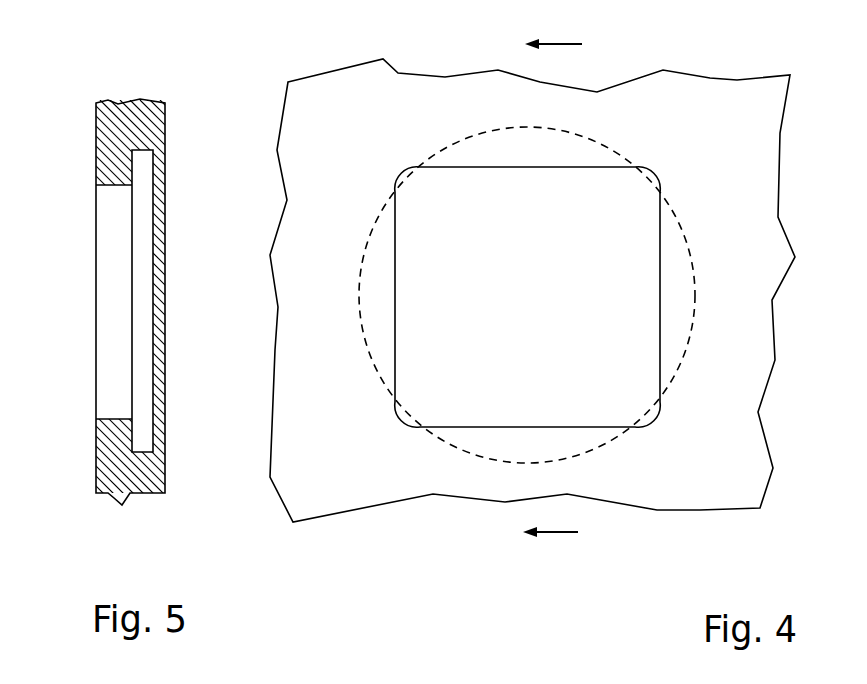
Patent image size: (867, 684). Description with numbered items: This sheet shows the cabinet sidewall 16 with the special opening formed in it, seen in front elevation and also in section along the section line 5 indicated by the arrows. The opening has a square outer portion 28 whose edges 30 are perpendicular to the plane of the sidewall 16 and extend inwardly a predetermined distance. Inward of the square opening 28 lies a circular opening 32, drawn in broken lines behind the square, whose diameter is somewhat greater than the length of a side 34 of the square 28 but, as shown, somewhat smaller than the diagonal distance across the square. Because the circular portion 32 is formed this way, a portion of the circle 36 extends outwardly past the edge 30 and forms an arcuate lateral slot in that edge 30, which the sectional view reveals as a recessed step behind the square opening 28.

In FIG. 4, the section line of Fig. 5 is at (562, 290).
In FIG. 5, the panel 16 is at (151, 125).
In FIG. 4, the panel 16 is at (662, 102).
In FIG. 5, the square outer portion 28 is at (112, 294).
In FIG. 4, the square outer portion 28 is at (456, 156).
In FIG. 5, the edges 30 is at (110, 186).
In FIG. 5, the circular opening 32 is at (136, 242).
In FIG. 4, the circular opening 32 is at (692, 222).
In FIG. 4, the side 34 is at (395, 298).
In FIG. 5, the portion of the circle 36 is at (140, 160).
In FIG. 4, the portion of the circle 36 is at (577, 155).